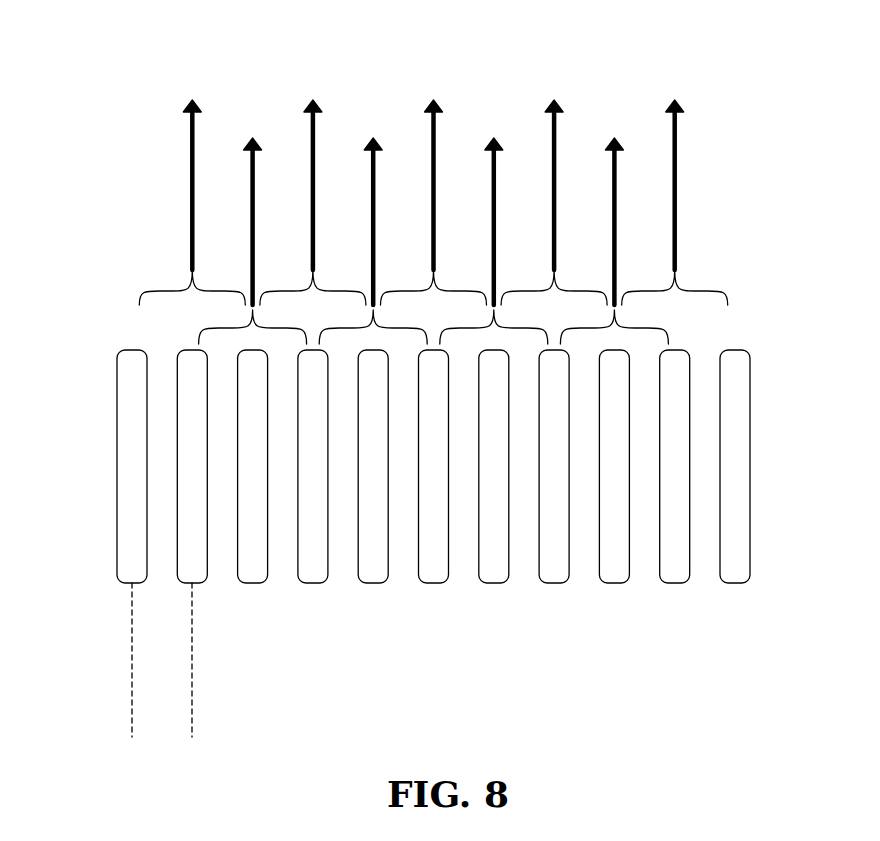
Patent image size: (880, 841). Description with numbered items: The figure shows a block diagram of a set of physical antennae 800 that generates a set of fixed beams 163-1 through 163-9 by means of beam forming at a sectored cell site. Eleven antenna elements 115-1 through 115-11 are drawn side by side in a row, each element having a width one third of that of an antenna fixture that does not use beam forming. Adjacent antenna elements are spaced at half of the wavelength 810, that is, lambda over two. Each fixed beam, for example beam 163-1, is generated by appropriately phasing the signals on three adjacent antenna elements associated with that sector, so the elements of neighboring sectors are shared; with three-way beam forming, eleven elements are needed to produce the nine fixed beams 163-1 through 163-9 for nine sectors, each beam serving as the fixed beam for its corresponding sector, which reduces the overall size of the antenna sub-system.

The set of physical antennae 800 is at (111, 81).
The fixed beam 163-1 is at (190, 178).
The fixed beam 163-9 is at (678, 177).
The antenna element 115-1 is at (117, 523).
The antenna element 115-11 is at (750, 543).
The half of the wavelength 810 is at (191, 690).